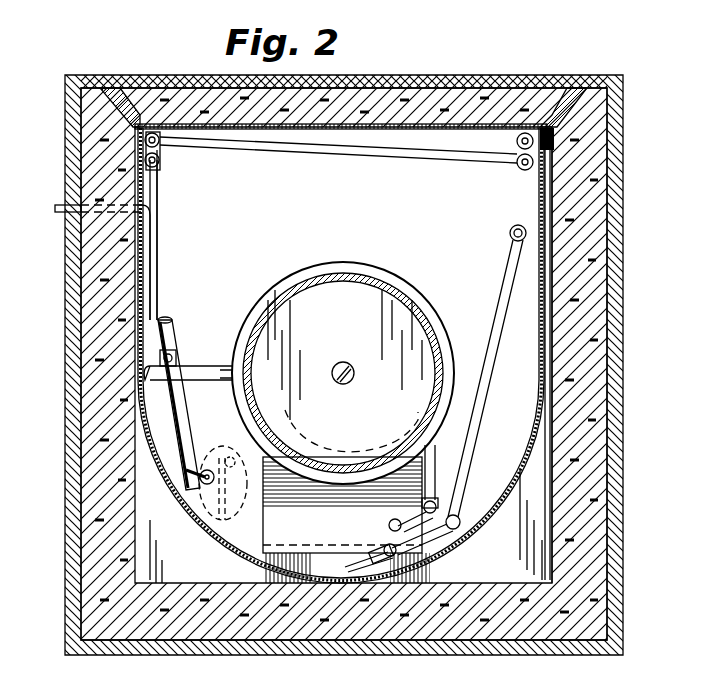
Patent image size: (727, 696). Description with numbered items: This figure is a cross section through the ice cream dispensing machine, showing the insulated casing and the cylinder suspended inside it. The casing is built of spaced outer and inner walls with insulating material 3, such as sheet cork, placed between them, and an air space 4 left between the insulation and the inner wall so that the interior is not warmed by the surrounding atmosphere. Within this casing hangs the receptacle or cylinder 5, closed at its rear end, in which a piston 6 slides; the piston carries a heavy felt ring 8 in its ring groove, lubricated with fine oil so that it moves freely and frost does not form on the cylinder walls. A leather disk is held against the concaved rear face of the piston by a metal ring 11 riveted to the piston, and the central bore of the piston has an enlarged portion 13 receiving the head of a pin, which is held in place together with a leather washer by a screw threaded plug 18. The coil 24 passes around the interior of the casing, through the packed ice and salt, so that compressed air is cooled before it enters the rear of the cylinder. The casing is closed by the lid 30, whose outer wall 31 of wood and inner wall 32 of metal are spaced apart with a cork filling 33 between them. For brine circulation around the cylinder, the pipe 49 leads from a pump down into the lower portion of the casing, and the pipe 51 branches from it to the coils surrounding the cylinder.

The insulating material 3 is at (487, 620).
The air space 4 is at (555, 291).
The receptacle or cylinder 5 is at (345, 356).
The piston 6 is at (330, 290).
The felt ring 8 is at (440, 330).
The metal ring 11 is at (188, 418).
The enlarged portion of the bore 13 is at (158, 263).
The screw threaded plug 18 is at (346, 364).
The coil 24 is at (520, 168).
The lid 30 is at (415, 80).
The outer wall of lid 31 is at (390, 88).
The inner wall of lid 32 is at (356, 124).
The cork filling 33 is at (506, 100).
The pipe 49 is at (465, 500).
The pipe 51 is at (420, 508).